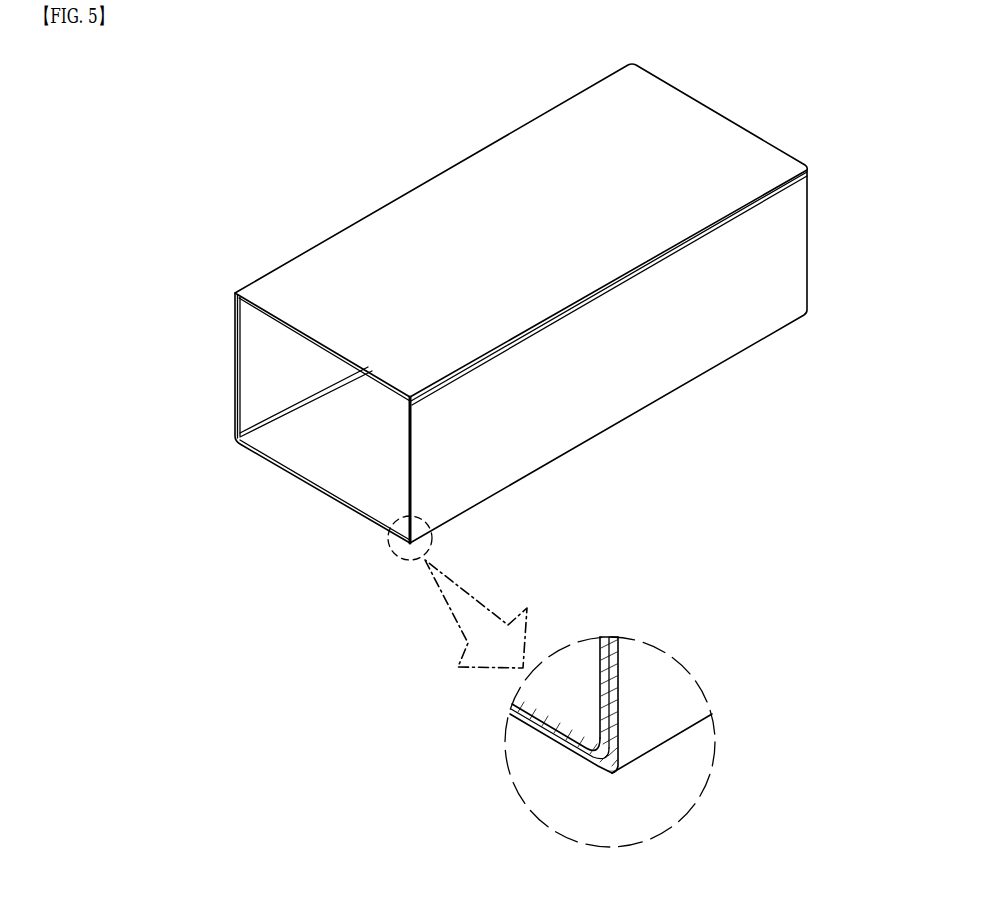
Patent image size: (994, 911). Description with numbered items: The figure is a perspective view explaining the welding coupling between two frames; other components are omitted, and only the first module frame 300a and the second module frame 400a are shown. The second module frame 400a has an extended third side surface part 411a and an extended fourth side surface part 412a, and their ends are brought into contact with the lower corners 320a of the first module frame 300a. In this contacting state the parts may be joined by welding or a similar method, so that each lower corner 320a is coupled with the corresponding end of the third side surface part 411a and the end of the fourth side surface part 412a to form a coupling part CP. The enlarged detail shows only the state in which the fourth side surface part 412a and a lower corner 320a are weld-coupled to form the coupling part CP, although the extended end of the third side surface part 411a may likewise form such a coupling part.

The second module frame 400a is at (384, 176).
The third side surface part 411a is at (234, 318).
The first module frame 300a is at (282, 486).
The lower corner 320a is at (257, 430).
The fourth side surface part 412a is at (613, 677).
The coupling part CP is at (603, 783).